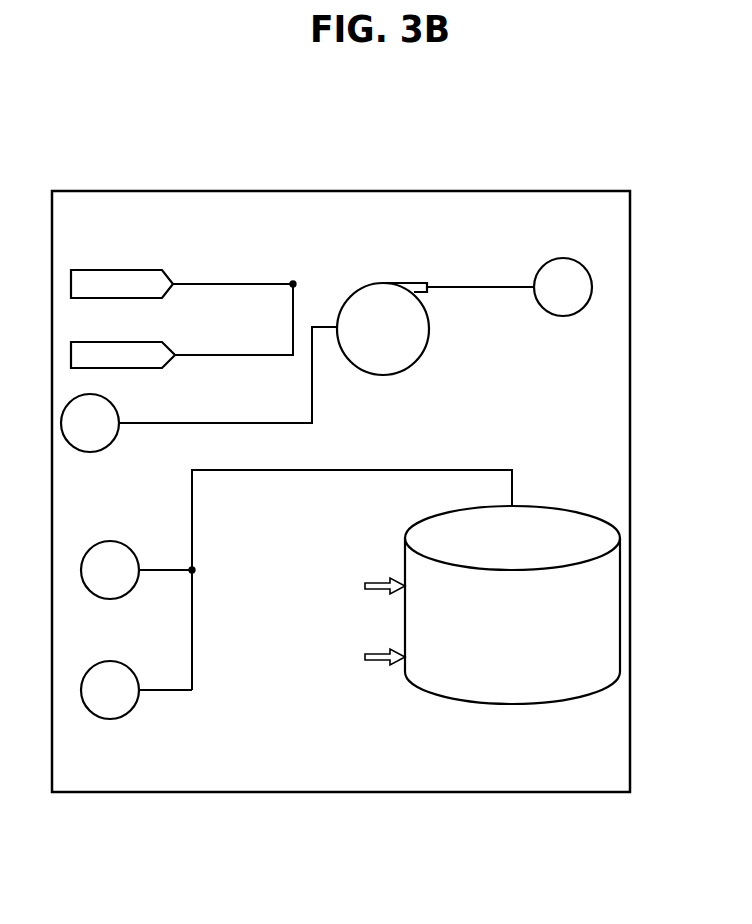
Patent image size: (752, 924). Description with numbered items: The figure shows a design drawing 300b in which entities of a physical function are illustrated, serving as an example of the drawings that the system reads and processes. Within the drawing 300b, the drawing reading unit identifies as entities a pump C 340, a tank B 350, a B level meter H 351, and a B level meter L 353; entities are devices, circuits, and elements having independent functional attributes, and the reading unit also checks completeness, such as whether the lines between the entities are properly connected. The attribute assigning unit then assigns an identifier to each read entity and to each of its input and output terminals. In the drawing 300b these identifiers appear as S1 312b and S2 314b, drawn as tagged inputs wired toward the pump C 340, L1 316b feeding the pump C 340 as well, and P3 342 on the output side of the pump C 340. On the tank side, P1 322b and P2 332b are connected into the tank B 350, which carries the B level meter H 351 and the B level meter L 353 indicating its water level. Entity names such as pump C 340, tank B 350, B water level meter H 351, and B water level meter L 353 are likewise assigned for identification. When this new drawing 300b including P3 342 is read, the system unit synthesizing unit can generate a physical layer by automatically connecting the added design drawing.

The design drawing 300b is at (386, 191).
The S1 identification number 312b is at (112, 269).
The S2 identification number 314b is at (115, 338).
The L1 identification number 316b is at (115, 407).
The pump C 340 is at (395, 282).
The P3 identification number 342 is at (592, 287).
The tank B 350 is at (532, 506).
The B level meter H 351 is at (307, 546).
The B level meter L 353 is at (307, 658).
The P1 identification number 322b is at (110, 541).
The P2 identification number 332b is at (110, 661).